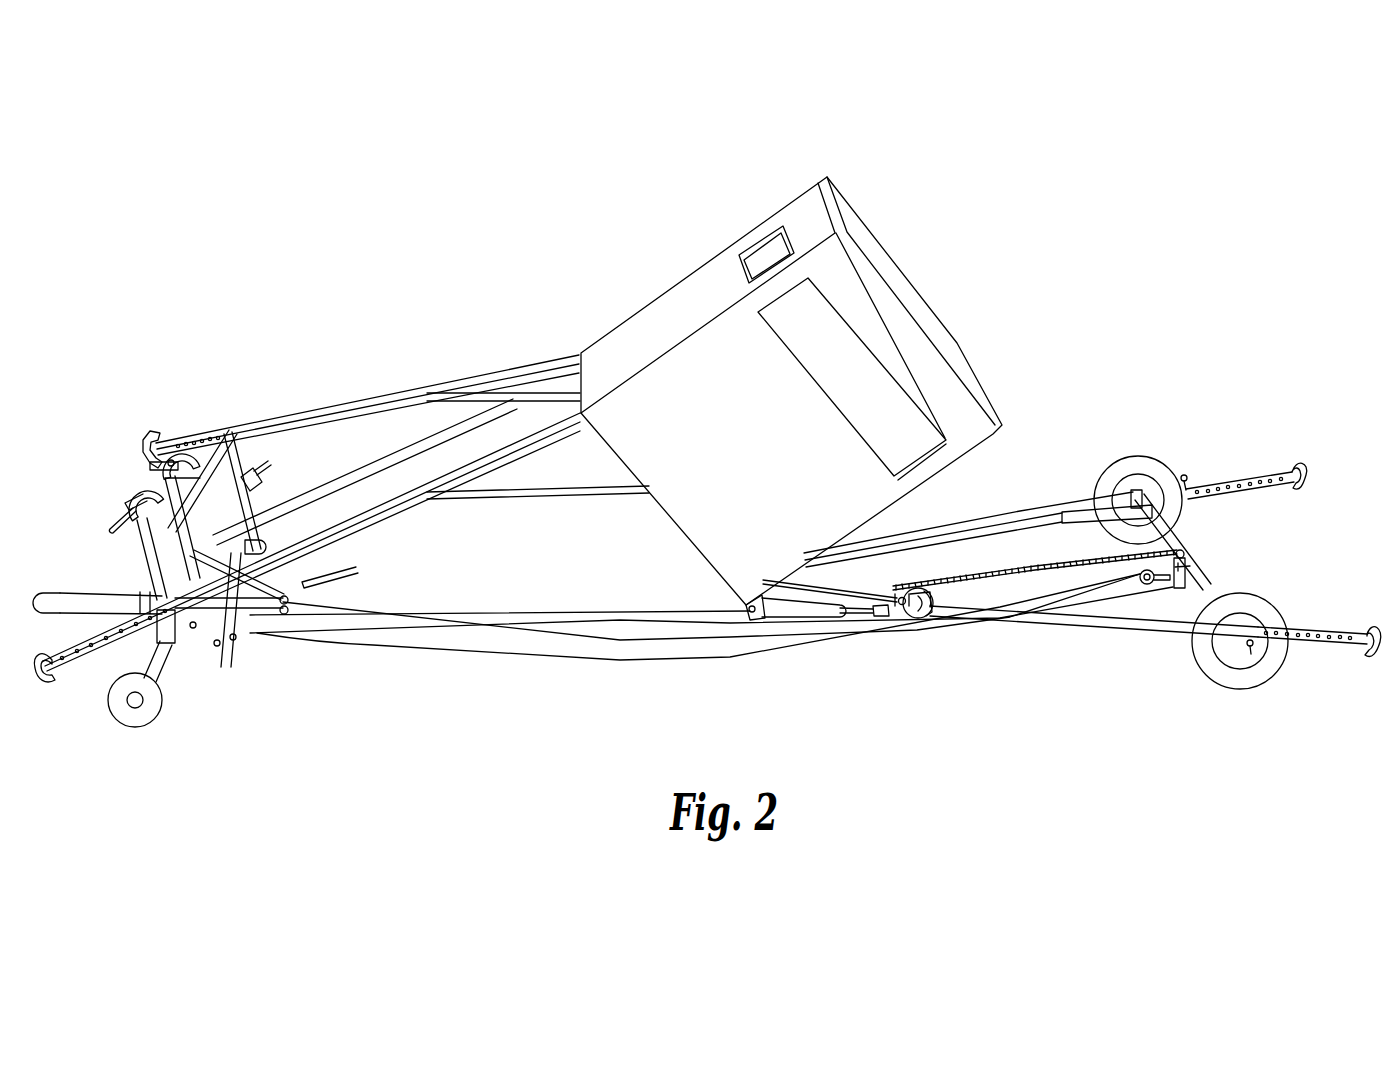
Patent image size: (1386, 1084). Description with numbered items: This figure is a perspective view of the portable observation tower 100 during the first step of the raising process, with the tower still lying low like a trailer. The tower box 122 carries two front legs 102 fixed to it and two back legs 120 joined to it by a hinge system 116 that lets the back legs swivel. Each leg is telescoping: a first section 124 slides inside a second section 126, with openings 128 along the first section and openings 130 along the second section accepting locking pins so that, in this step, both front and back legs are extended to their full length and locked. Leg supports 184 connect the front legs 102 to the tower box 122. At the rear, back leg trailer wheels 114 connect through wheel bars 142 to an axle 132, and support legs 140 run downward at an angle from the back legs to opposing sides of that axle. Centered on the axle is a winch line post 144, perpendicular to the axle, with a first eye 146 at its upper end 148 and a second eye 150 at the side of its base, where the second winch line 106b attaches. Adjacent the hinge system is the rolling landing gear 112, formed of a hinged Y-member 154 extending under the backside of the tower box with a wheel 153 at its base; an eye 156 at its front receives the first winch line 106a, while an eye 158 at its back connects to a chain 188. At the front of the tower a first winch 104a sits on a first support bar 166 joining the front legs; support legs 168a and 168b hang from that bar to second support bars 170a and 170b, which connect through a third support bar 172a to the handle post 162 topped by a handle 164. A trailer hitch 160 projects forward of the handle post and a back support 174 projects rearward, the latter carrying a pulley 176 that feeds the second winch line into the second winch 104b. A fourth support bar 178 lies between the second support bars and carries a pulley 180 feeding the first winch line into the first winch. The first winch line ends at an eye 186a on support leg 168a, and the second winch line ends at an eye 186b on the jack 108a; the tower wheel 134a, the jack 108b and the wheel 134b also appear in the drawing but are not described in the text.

The portable observation tower 100 is at (330, 246).
The tower box 122 is at (676, 256).
The front legs 102 is at (407, 390).
The second section 126 is at (323, 407).
The leg supports 184 is at (556, 495).
The first section 124 is at (217, 447).
The openings 128 is at (1240, 497).
The openings 130 is at (1187, 486).
The back leg trailer wheels 114 is at (1130, 456).
The axle 132 is at (1127, 503).
The back legs 120 is at (1000, 508).
The support legs 140 is at (1088, 523).
The wheel bars 142 is at (1178, 519).
The first eye 146 is at (1187, 552).
The upper end 148 is at (1193, 563).
The winch line post 144 is at (1197, 578).
The second eye 150 is at (1163, 590).
The chain 188 is at (1020, 563).
The hinge system 116 is at (751, 603).
The rolling landing gear 112 is at (822, 584).
The eye 158 is at (897, 596).
The hinged Y-member 154 is at (918, 614).
The wheel 153 is at (936, 599).
The eye 156 is at (878, 618).
The first winch line 106a is at (623, 612).
The second winch line 106b is at (685, 650).
The caster wheel 134a is at (125, 705).
The jack 108a is at (157, 667).
The second support bar 170a is at (162, 617).
The trailer hitch 160 is at (57, 593).
The back support 174 is at (120, 592).
The third support bar 172a is at (150, 562).
The handle post 162 is at (110, 524).
The handle 164 is at (124, 506).
The second winch 104b is at (130, 486).
The first winch 104a is at (177, 427).
The first support bar 166 is at (175, 460).
The support leg 168b is at (240, 434).
The second caster leg 108b is at (262, 465).
The second support bar 170b is at (264, 486).
The second caster wheel 134b is at (262, 542).
The support leg 168a is at (224, 668).
The eye 186a is at (219, 646).
The eye 186b is at (193, 629).
The fourth support bar 178 is at (235, 640).
The pulley 176 is at (283, 567).
The pulley 180 is at (300, 595).